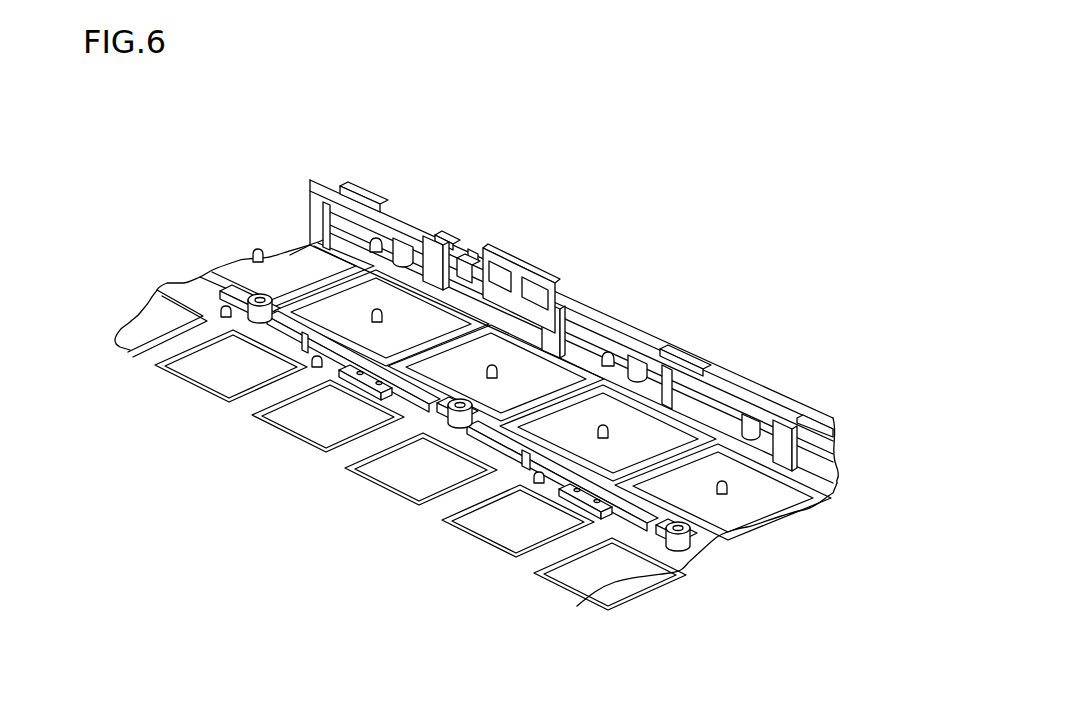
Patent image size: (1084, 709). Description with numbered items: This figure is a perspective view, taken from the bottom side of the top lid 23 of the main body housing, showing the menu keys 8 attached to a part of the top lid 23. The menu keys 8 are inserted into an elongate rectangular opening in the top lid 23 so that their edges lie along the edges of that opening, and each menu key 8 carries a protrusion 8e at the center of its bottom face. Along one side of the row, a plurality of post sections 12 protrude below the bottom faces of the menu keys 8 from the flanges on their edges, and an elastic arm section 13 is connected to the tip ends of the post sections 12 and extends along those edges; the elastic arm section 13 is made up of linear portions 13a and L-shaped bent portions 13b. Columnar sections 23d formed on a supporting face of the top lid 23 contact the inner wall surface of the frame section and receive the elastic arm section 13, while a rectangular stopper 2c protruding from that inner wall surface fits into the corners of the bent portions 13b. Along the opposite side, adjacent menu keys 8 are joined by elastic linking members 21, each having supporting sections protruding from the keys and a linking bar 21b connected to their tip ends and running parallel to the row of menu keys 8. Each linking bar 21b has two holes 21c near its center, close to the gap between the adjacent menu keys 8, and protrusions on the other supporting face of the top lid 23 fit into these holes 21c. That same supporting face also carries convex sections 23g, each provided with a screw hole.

The menu key 8 is at (286, 262).
The protrusion 8e is at (257, 250).
The post section 12 is at (314, 212).
The elastic arm section 13 is at (583, 269).
The linear portion 13a is at (680, 350).
The L-shaped bent portion 13b is at (470, 258).
The rectangular stopper 2c is at (517, 275).
The elastic linking member 21 is at (425, 443).
The linking bar 21b is at (397, 403).
The hole 21c is at (380, 383).
The top lid 23 is at (838, 455).
The columnar section 23d is at (395, 240).
The convex section 23g is at (676, 552).